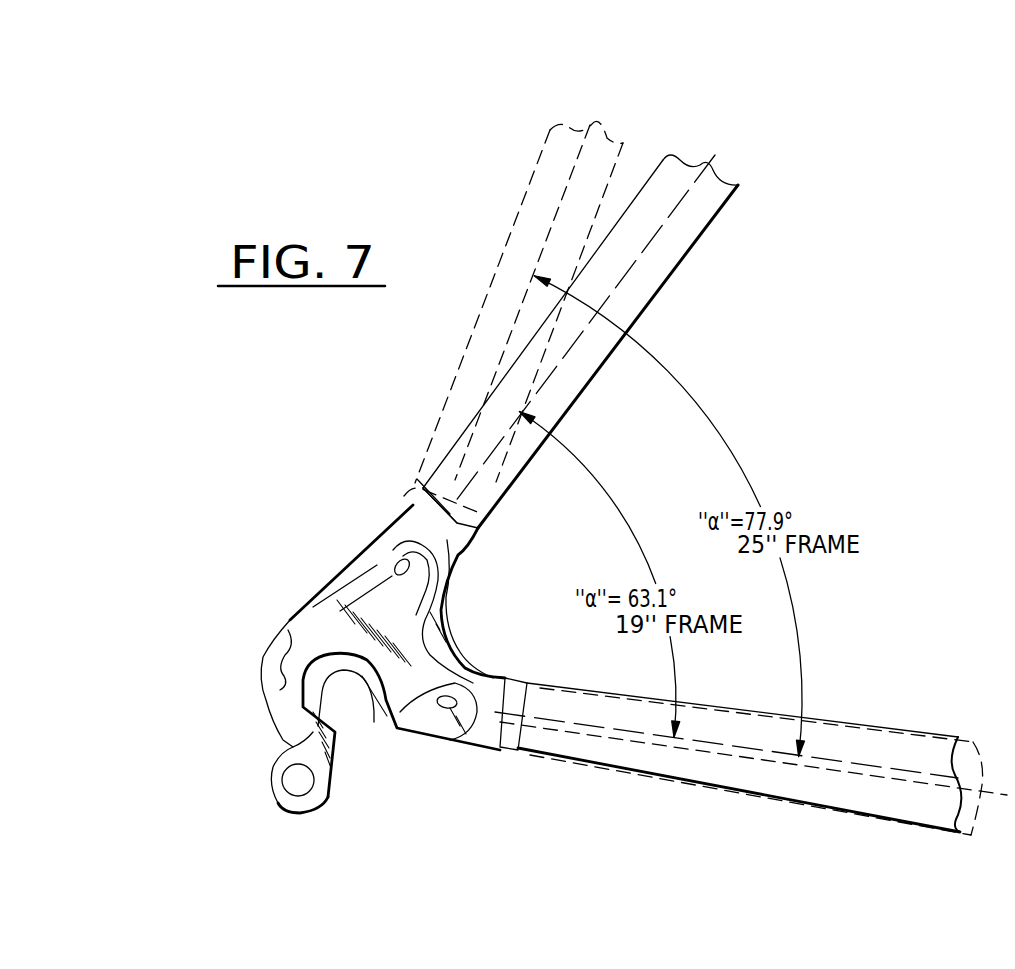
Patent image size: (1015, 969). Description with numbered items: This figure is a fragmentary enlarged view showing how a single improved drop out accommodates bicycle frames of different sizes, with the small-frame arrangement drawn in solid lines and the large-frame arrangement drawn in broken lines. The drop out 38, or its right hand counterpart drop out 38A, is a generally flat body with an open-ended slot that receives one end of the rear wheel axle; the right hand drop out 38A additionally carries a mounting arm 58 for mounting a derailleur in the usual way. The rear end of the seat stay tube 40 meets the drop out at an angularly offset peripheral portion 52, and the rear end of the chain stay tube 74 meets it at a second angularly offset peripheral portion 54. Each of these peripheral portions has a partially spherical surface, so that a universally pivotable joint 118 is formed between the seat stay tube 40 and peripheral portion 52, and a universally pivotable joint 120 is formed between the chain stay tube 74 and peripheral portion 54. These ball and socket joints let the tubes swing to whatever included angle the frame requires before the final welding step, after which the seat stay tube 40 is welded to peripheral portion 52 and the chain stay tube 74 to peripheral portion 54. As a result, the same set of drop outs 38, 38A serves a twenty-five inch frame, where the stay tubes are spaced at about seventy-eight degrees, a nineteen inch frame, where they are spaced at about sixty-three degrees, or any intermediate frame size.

The drop out 38 is at (280, 667).
The right hand drop out 38A is at (263, 710).
The seat stay tube 40 is at (683, 233).
The angularly offset peripheral portion 52 is at (402, 555).
The angularly offset peripheral portion 54 is at (460, 718).
The mounting arm 58 is at (295, 748).
The chain stay tube 74 is at (597, 745).
The universally pivotable joint 118 is at (470, 545).
The universally pivotable joint 120 is at (513, 673).